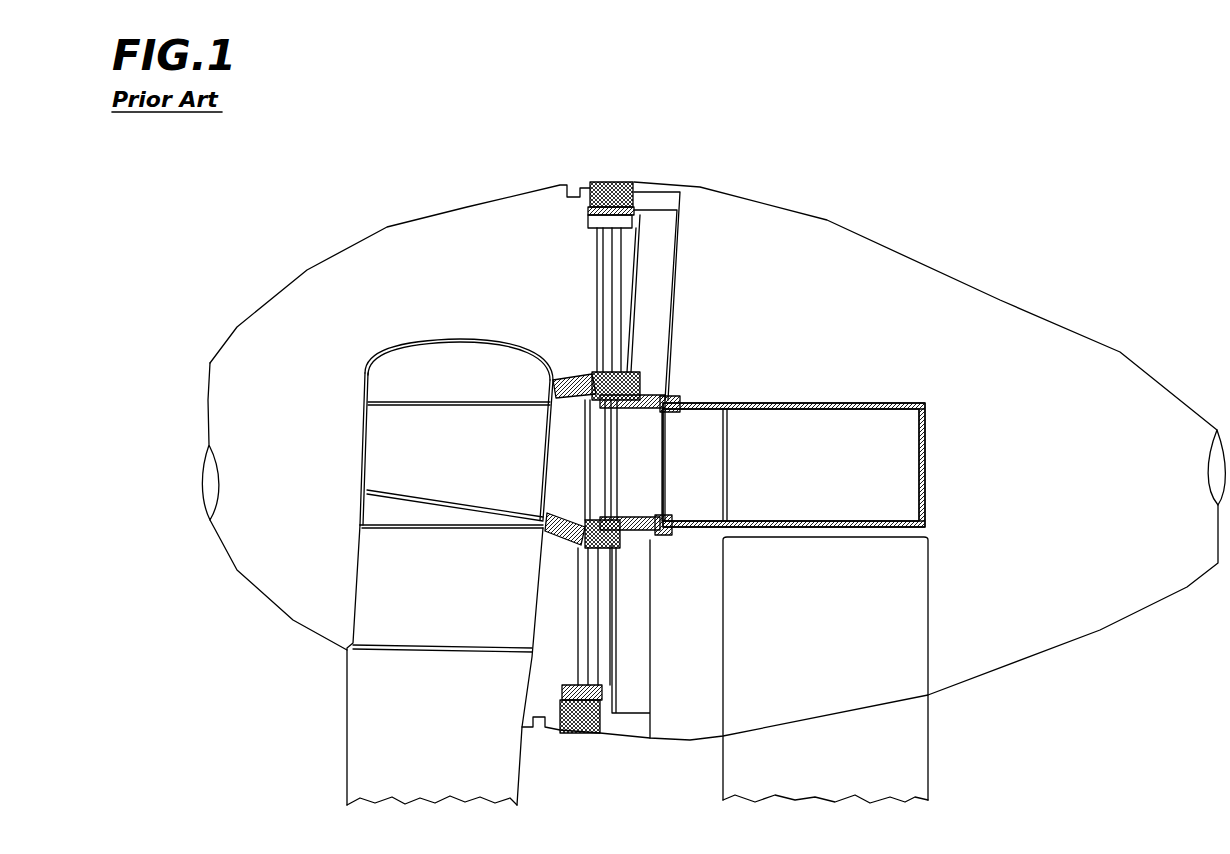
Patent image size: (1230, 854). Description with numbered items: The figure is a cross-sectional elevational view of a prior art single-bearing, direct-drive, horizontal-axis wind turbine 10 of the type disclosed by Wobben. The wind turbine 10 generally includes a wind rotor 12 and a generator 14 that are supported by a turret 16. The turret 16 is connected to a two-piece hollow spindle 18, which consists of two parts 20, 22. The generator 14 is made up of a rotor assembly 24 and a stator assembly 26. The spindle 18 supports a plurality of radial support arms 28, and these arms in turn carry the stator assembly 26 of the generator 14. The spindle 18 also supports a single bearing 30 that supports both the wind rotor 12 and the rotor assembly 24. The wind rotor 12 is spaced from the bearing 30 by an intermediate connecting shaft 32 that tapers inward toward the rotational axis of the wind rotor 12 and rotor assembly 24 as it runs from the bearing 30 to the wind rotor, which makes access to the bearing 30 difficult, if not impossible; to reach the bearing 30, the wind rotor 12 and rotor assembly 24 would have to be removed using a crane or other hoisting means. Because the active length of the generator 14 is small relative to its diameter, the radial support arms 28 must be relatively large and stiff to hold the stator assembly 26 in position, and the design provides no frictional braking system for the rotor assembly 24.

The wind turbine 10 is at (711, 419).
The wind rotor 12 is at (285, 630).
The generator 14 is at (558, 219).
The turret 16 is at (905, 482).
The two-piece hollow spindle 18 is at (635, 535).
The spindle part 20 is at (578, 430).
The spindle part 22 is at (640, 505).
The rotor assembly 24 is at (598, 305).
The stator assembly 26 is at (604, 178).
The radial support arms 28 is at (663, 292).
The bearing 30 is at (640, 378).
The intermediate connecting shaft 32 is at (555, 553).